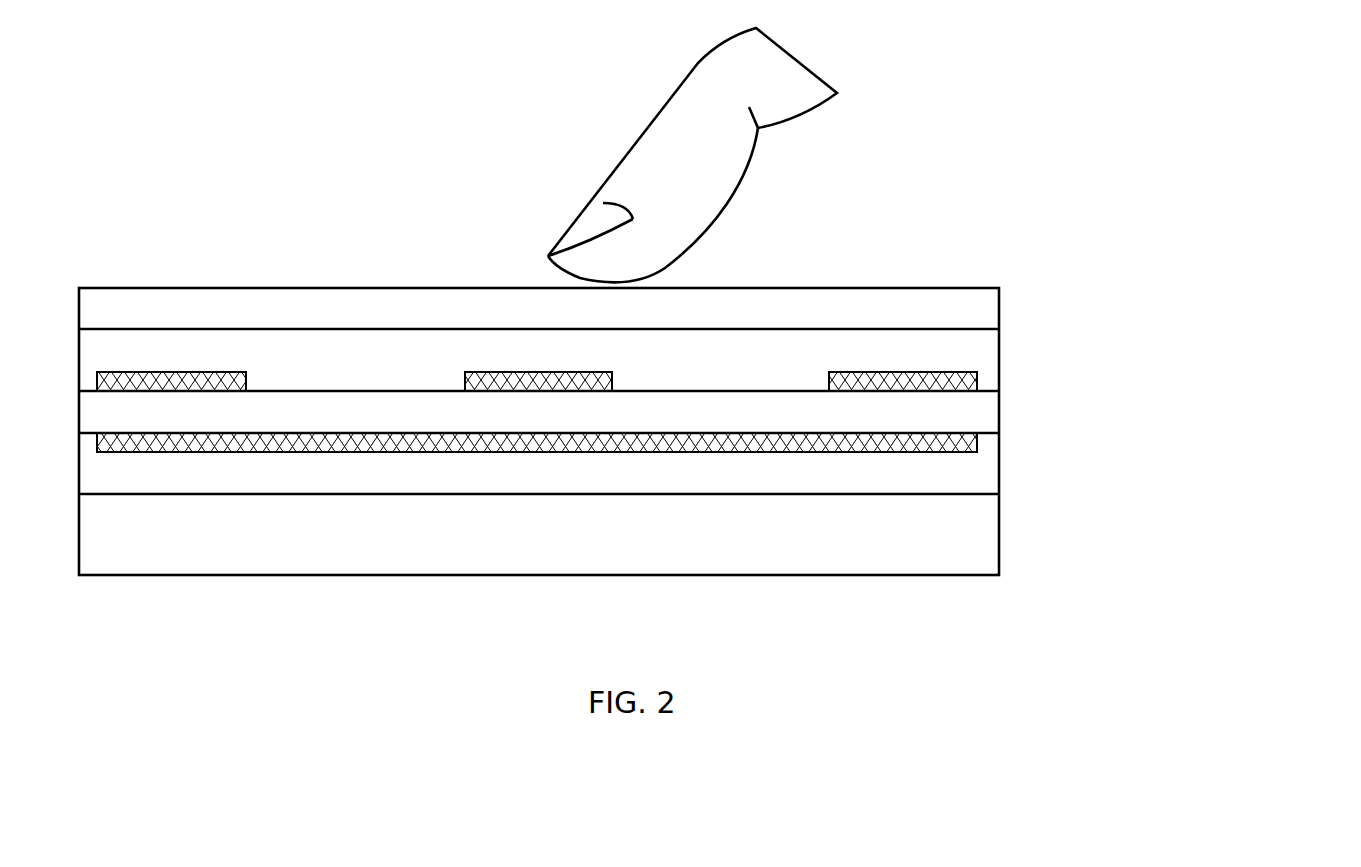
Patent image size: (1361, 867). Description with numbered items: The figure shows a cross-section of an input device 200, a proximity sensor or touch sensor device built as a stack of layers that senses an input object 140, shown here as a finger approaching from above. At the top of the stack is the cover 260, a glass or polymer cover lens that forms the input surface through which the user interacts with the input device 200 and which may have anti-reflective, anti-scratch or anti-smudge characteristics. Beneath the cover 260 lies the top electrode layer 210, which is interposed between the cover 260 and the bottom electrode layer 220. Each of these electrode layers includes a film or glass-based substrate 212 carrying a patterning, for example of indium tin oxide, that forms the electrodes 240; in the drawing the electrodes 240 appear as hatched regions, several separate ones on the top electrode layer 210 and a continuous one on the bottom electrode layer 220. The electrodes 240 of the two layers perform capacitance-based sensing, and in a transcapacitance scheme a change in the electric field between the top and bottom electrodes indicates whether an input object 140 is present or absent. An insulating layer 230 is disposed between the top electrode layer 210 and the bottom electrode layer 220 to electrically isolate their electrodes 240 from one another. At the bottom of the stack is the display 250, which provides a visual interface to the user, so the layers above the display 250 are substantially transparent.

The input object 140 is at (642, 179).
The input device 200 is at (1050, 146).
The top electrode layer 210 is at (960, 357).
The substrate 212 is at (539, 411).
The bottom electrode layer 220 is at (960, 469).
The insulating layer 230 is at (539, 412).
The electrodes 240 is at (960, 441).
The display 250 is at (539, 534).
The cover 260 is at (539, 313).